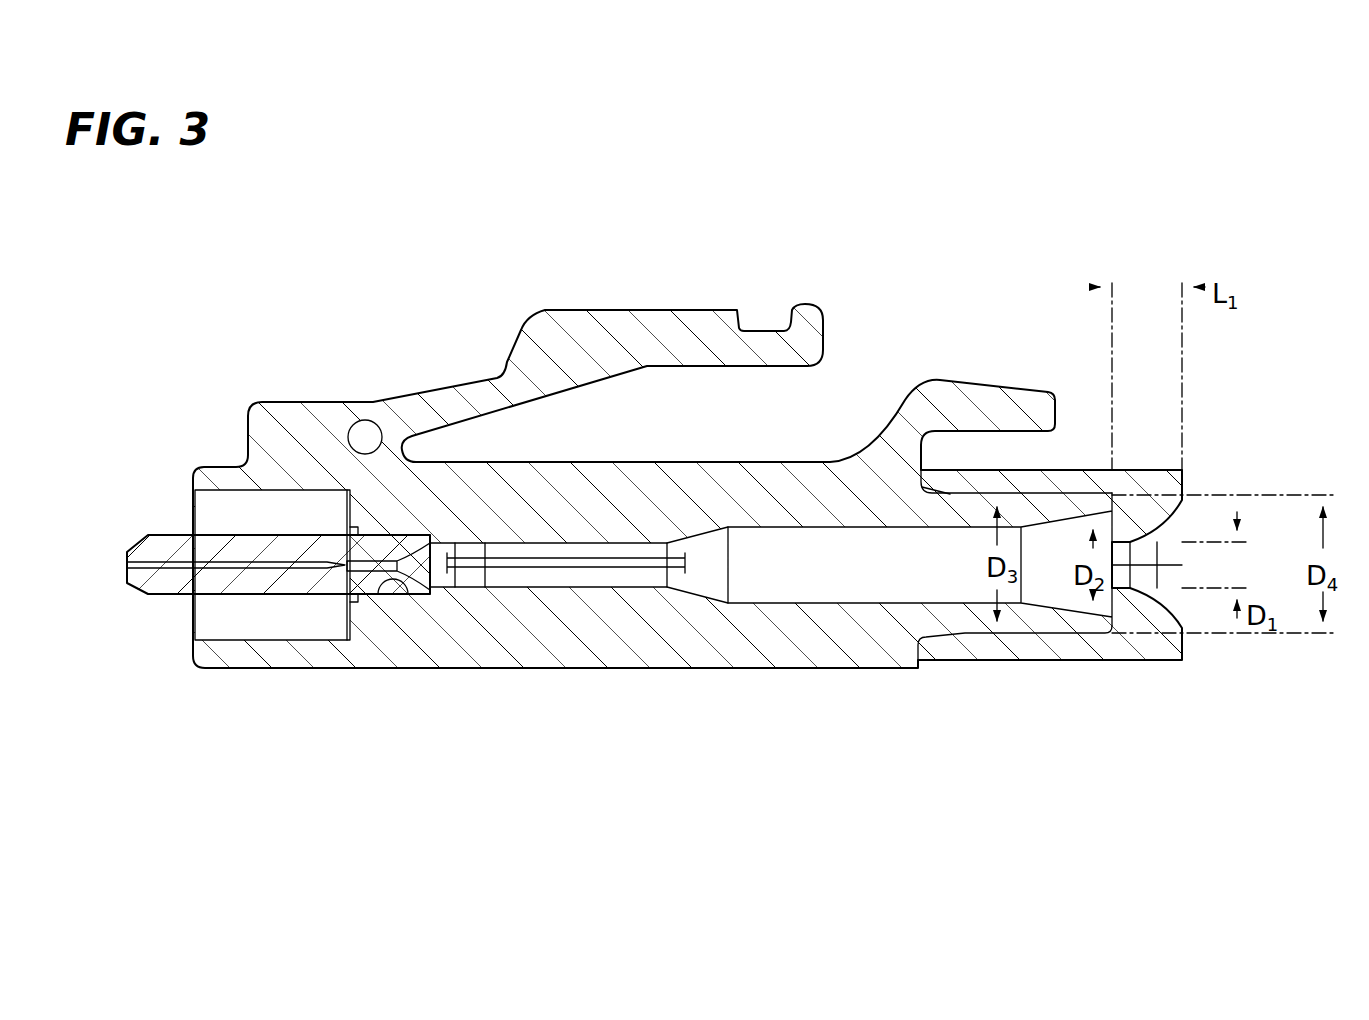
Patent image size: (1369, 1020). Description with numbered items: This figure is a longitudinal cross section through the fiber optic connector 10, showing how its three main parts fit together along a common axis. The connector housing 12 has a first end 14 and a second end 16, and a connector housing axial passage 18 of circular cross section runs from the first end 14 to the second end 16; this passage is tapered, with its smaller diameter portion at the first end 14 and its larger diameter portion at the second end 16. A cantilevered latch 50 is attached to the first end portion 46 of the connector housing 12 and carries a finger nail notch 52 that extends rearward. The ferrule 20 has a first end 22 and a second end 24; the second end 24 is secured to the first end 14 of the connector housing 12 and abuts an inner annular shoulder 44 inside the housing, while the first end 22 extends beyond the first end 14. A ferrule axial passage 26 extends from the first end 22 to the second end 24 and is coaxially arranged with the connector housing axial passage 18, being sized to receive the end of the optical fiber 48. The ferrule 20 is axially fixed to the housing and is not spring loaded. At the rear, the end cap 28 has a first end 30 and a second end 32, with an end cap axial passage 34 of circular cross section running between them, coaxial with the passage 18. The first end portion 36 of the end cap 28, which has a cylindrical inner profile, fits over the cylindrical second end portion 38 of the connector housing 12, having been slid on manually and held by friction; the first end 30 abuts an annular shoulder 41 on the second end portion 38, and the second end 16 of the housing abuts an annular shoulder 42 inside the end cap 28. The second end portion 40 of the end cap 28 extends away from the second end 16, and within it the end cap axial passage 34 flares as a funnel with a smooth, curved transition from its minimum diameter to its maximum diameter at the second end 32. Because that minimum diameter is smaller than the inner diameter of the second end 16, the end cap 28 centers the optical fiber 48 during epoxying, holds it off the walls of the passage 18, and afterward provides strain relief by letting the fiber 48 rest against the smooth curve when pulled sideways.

The fiber optic connector 10 is at (922, 200).
The connector housing 12 is at (684, 448).
The first end 14 is at (195, 477).
The second end 16 is at (1112, 625).
The connector housing axial passage 18 is at (790, 573).
The ferrule 20 is at (163, 610).
The first end 22 is at (127, 573).
The second end 24 is at (433, 545).
The ferrule axial passage 26 is at (182, 563).
The end cap 28 is at (1070, 455).
The first end 30 is at (926, 472).
The second end 32 is at (1182, 478).
The end cap axial passage 34 is at (1015, 378).
The first end portion 36 is at (972, 661).
The second end portion 38 is at (936, 630).
The second end portion 40 is at (1172, 661).
The annular shoulder 41 is at (917, 482).
The annular shoulder 42 is at (1112, 497).
The inner annular shoulder 44 is at (433, 593).
The first end portion 46 is at (380, 512).
The optical fiber 48 is at (588, 570).
The cantilevered latch 50 is at (560, 280).
The finger nail notch 52 is at (769, 330).